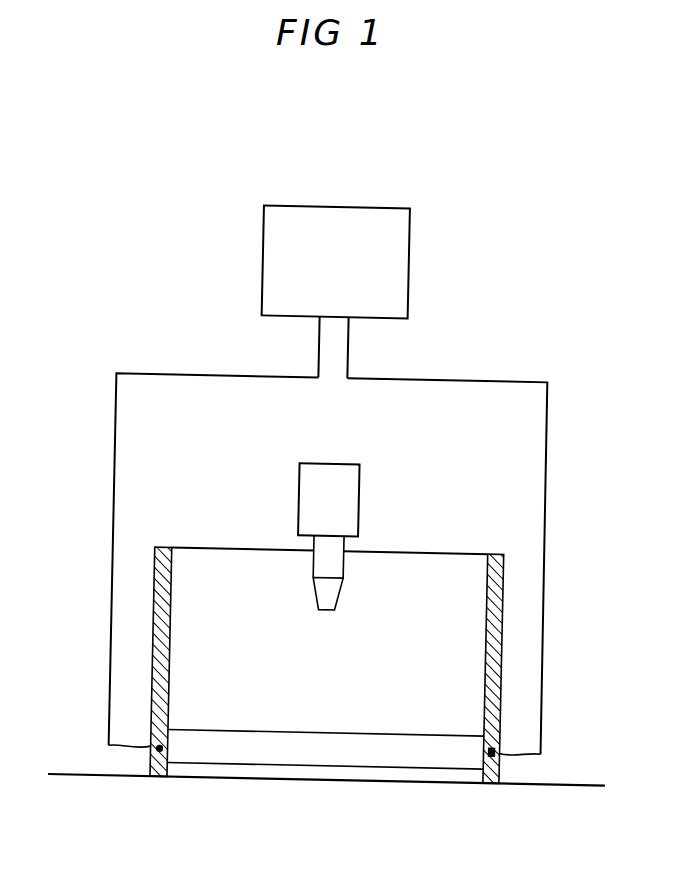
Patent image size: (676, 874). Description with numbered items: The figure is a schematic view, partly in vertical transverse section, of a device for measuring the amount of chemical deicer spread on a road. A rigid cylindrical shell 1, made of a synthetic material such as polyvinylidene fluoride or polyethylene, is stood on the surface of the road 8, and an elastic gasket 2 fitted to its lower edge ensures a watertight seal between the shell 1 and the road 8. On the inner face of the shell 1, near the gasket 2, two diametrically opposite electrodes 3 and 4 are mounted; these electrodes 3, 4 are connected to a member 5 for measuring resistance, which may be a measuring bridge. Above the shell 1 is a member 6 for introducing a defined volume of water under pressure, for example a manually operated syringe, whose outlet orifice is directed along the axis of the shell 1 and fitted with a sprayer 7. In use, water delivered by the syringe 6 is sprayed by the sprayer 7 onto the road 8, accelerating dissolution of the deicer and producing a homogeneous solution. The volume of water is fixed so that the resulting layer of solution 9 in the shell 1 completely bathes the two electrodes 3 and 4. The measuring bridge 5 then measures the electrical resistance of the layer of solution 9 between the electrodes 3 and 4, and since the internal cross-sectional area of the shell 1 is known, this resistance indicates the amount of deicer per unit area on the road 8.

The rigid cylindrical shell 1 is at (500, 562).
The elastic gasket 2 is at (503, 767).
The electrode 3 is at (162, 746).
The electrode 4 is at (489, 743).
The member for measuring resistance 5 is at (381, 253).
The member for introducing water 6 is at (320, 472).
The sprayer 7 is at (326, 585).
The road 8 is at (83, 774).
The layer of solution 9 is at (343, 726).